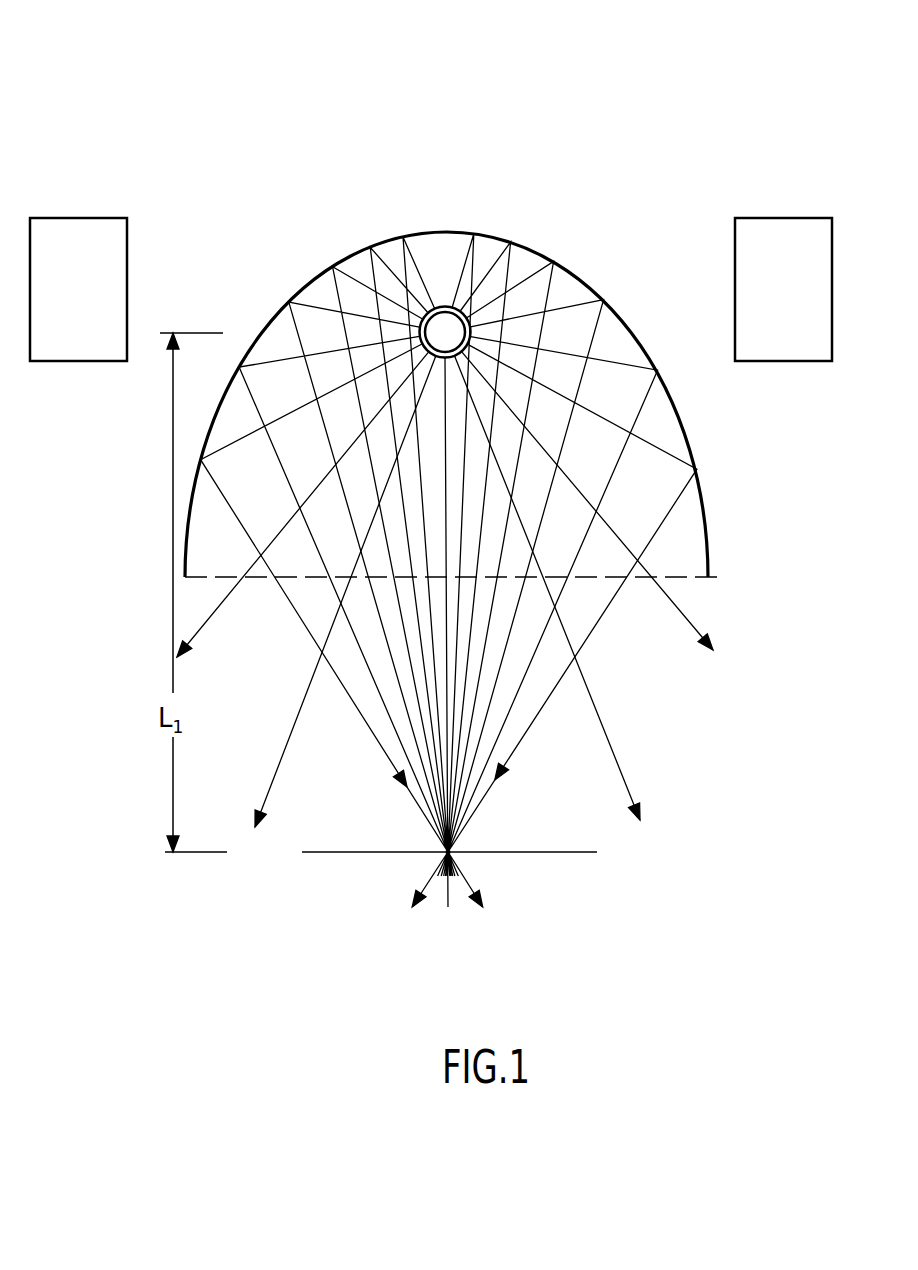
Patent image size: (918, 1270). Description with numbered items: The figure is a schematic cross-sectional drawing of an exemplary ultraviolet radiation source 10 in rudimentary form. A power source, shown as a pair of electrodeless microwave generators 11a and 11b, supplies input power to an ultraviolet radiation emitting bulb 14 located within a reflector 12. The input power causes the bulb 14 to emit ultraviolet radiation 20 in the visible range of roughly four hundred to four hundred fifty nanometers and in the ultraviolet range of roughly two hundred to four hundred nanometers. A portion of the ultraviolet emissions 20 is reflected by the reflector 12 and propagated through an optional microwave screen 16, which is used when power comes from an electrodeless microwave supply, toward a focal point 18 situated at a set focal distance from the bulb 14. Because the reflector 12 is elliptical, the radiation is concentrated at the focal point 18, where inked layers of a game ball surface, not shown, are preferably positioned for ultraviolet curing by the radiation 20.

The ultraviolet radiation source 10 is at (343, 157).
The electrodeless microwave generator 11a is at (70, 218).
The electrodeless microwave generator 11b is at (783, 218).
The reflector 12 is at (542, 253).
The ultraviolet radiation emitting bulb 14 is at (445, 328).
The microwave screen 16 is at (702, 581).
The focal point 18 is at (470, 862).
The ultraviolet radiation 20 is at (613, 747).